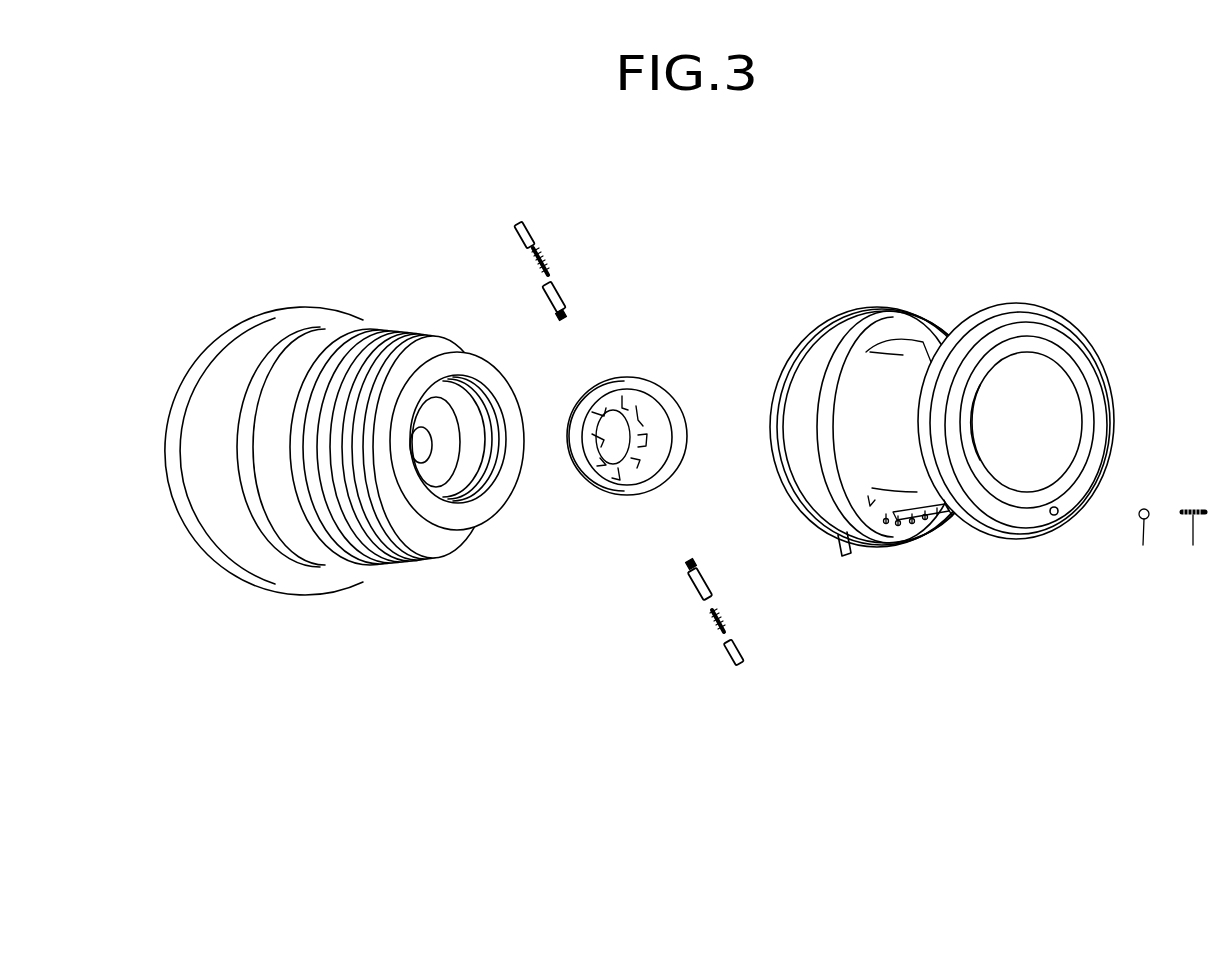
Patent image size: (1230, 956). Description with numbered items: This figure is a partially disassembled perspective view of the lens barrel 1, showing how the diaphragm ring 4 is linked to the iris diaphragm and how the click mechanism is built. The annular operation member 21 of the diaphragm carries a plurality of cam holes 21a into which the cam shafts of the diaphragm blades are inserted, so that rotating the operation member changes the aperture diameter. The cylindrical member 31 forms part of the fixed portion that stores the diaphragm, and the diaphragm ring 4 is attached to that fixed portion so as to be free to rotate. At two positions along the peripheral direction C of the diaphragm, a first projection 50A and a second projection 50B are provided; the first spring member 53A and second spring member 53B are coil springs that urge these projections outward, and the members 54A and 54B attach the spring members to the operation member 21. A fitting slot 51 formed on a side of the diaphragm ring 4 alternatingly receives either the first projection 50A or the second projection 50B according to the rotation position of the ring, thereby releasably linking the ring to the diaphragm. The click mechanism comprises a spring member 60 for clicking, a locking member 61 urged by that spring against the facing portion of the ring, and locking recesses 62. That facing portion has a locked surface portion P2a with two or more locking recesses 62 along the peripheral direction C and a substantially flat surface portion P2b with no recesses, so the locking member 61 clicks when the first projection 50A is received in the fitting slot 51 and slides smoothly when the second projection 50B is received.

The lens barrel 1 is at (1022, 222).
The diaphragm ring 4 is at (880, 302).
The operation member 21 is at (632, 375).
The cam holes 21a is at (631, 458).
The cylindrical member 31 is at (1110, 380).
The first projection 50A is at (530, 228).
The first spring member 53A is at (545, 266).
The attaching member 54A is at (563, 293).
The second projection 50B is at (728, 662).
The second spring member 53B is at (715, 626).
The attaching member 54B is at (694, 590).
The fitting slot 51 is at (946, 520).
The spring member for clicking 60 is at (1193, 545).
The locking member 61 is at (1143, 545).
The locking recess 62 is at (937, 515).
The locked surface portion P2a is at (870, 500).
The substantially flat surface portion P2b is at (873, 353).
The peripheral direction C is at (556, 453).